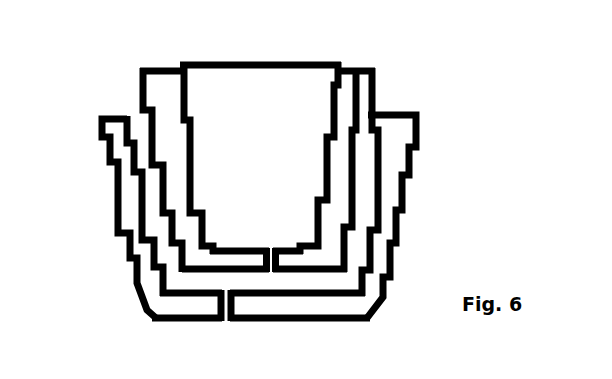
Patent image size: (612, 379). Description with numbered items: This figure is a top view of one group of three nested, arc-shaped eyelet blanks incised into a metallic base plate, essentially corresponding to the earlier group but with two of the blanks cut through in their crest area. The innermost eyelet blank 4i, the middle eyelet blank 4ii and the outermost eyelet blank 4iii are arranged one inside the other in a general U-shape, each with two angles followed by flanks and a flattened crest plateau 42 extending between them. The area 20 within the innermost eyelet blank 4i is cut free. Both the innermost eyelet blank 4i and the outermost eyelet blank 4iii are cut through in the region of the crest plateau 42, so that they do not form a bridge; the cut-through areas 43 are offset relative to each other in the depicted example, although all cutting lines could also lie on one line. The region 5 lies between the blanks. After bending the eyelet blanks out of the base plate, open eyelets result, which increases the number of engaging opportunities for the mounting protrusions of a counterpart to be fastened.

The innermost eyelet blank 4i is at (334, 180).
The middle eyelet blank 4ii is at (146, 199).
The outermost eyelet blank 4iii is at (143, 252).
The connection region between shells 5 is at (145, 130).
The area within the innermost eyelet blank 20 is at (273, 146).
The crest plateau 42 is at (228, 263).
The cut-through area 43 is at (273, 258).